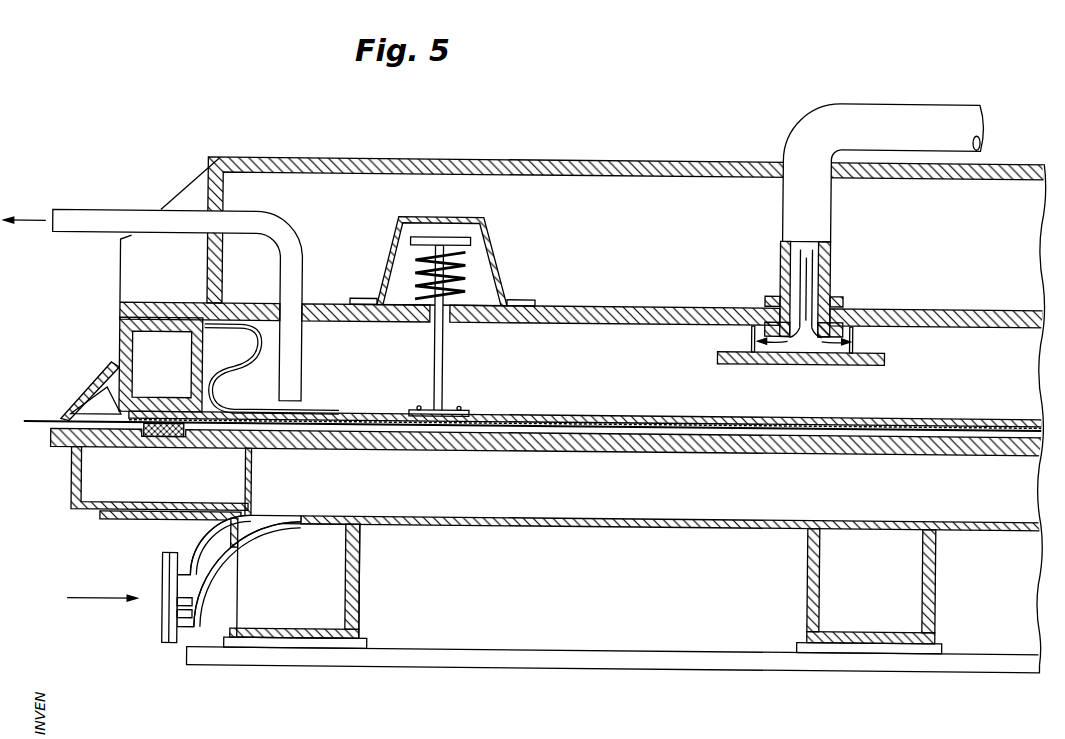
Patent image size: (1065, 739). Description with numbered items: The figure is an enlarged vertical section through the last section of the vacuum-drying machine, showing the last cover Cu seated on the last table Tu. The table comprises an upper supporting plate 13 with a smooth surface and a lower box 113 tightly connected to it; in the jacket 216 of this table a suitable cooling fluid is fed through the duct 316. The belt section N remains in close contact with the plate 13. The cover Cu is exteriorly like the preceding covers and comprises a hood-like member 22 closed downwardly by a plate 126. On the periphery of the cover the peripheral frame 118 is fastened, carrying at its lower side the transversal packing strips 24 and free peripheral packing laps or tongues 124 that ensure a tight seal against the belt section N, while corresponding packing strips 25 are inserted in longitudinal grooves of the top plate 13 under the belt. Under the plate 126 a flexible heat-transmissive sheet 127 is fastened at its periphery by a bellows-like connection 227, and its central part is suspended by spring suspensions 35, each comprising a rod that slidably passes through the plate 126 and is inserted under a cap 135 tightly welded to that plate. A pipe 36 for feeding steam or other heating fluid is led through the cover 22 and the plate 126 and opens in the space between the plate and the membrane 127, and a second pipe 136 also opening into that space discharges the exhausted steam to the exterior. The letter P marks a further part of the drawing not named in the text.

The hood-like member 22 is at (703, 165).
The pipe 36 is at (912, 101).
The second pipe 136 is at (91, 214).
The cap 135 is at (495, 242).
The spring suspension 35 is at (432, 383).
The plate 126 is at (676, 298).
The flexible heat-transmissive sheet 127 is at (566, 411).
The peripheral frame 118 is at (118, 345).
The bellows-like connection 227 is at (222, 377).
The peripheral packing lap 124 is at (85, 404).
The packing strip 25 is at (165, 438).
The transversal packing strip 24 is at (140, 450).
The upper supporting plate 13 is at (683, 451).
The lower box 113 is at (753, 515).
The duct 316 is at (219, 565).
The jacket 216 is at (600, 487).
The belt section N is at (28, 421).
The plate P is at (664, 414).
The last cover Cu is at (414, 157).
The table Tu is at (526, 521).